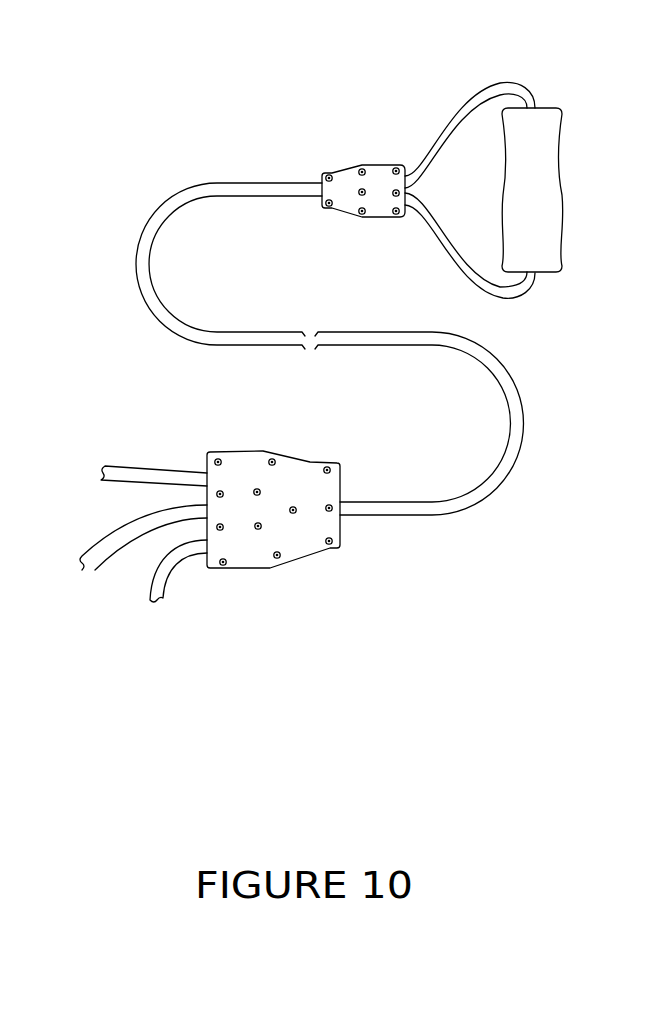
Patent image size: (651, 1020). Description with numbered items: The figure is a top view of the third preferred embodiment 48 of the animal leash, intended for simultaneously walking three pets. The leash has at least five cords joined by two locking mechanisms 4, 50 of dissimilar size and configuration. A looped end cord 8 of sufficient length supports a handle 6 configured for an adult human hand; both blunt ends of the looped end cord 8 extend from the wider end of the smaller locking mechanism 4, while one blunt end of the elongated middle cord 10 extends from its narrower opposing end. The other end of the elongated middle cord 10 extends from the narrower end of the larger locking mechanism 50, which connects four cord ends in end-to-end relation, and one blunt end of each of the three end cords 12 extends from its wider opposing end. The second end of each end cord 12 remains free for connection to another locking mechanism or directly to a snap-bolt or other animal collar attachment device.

The third preferred embodiment 48 is at (193, 143).
The locking mechanism 4 is at (360, 167).
The handle 6 is at (560, 274).
The looped end cord 8 is at (447, 248).
The elongated middle cord 10 is at (215, 328).
The end cords 12 is at (121, 543).
The locking mechanism 50 is at (281, 470).